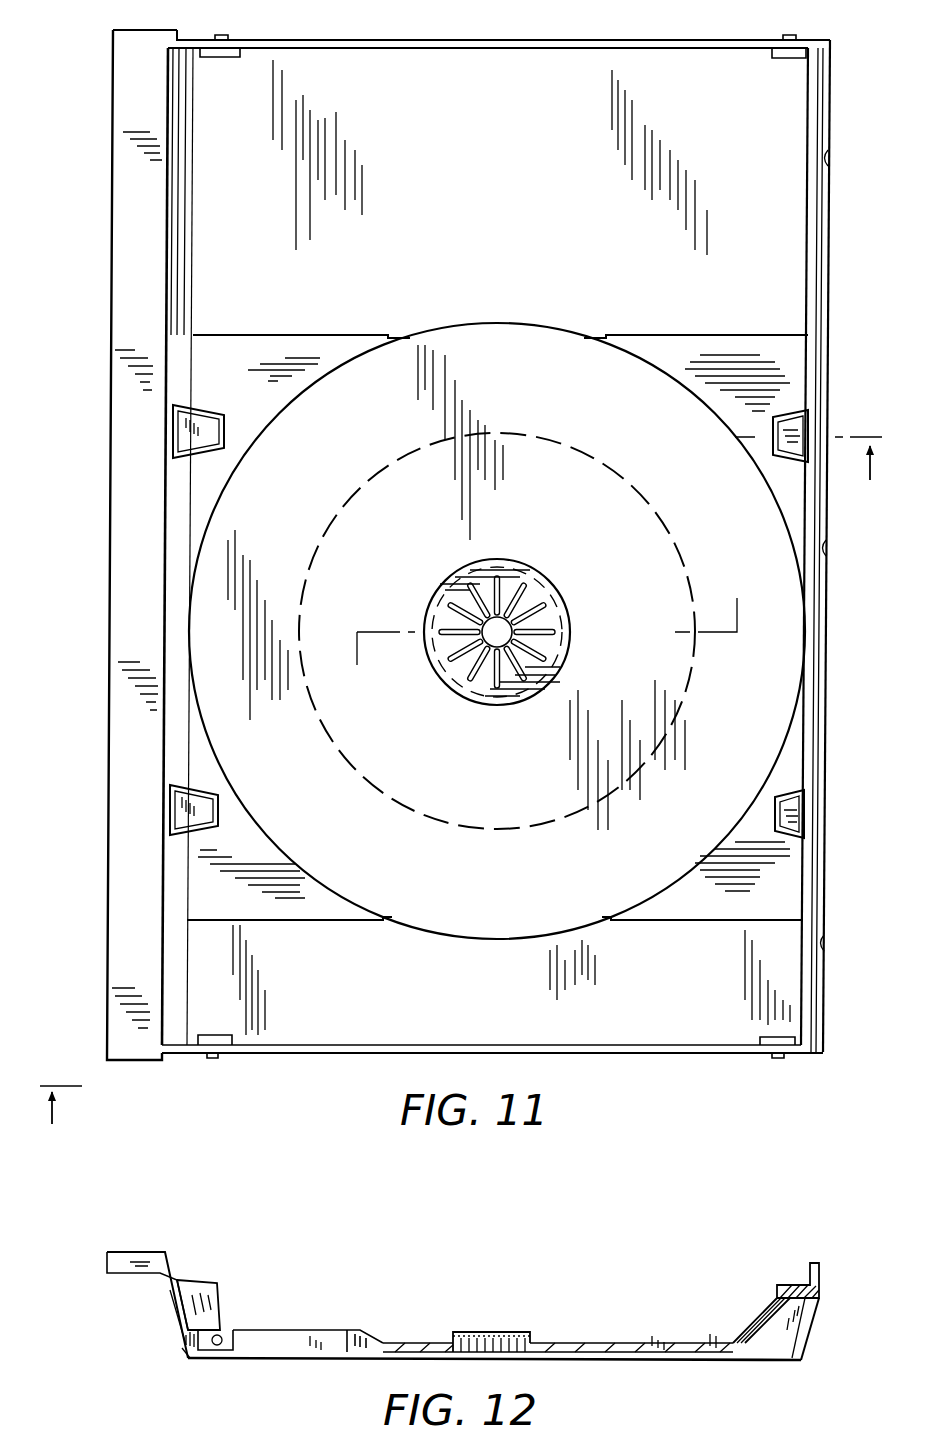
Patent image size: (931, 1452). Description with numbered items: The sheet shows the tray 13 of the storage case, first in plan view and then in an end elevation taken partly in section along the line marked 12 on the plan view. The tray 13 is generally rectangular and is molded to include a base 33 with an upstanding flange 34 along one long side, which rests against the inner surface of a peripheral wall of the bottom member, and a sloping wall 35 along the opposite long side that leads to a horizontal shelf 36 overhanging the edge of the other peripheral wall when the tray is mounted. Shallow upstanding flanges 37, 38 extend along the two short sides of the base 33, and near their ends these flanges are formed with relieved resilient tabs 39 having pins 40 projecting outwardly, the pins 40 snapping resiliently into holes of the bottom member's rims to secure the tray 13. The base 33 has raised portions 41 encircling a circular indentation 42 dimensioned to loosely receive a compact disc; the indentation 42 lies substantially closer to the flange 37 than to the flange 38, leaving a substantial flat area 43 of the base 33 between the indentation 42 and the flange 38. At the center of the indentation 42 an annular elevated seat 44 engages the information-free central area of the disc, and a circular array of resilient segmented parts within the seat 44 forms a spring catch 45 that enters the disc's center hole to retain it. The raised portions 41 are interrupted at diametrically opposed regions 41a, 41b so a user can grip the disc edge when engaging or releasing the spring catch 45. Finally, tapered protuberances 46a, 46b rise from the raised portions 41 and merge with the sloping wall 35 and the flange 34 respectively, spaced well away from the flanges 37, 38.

In FIG. 11, the lid member 12 is at (465, 805).
In FIG. 11, the tray 13 is at (472, 558).
In FIG. 12, the tray 13 is at (463, 1301).
In FIG. 11, the base 33 is at (398, 86).
In FIG. 11, the upstanding flange 34 is at (823, 322).
In FIG. 12, the upstanding flange 34 is at (802, 1283).
In FIG. 11, the sloping wall 35 is at (183, 314).
In FIG. 12, the sloping wall 35 is at (175, 1312).
In FIG. 11, the horizontal shelf 36 is at (123, 648).
In FIG. 12, the horizontal shelf 36 is at (141, 1252).
In FIG. 11, the shallow upstanding flange 37 is at (626, 1054).
In FIG. 11, the shallow upstanding flange 38 is at (688, 46).
In FIG. 12, the relieved resilient tab 39 is at (183, 1362).
In FIG. 11, the pin 40 is at (220, 38).
In FIG. 12, the pin 40 is at (223, 1332).
In FIG. 11, the raised portions 41 is at (290, 345).
In FIG. 12, the raised portions 41 is at (315, 1337).
In FIG. 11, the interruption of raised portions 41a is at (582, 319).
In FIG. 11, the interruption of raised portions 41b is at (655, 961).
In FIG. 11, the circular indentation 42 is at (418, 340).
In FIG. 12, the circular indentation 42 is at (622, 1343).
In FIG. 11, the flat area 43 is at (516, 202).
In FIG. 11, the annular elevated seat 44 is at (518, 608).
In FIG. 12, the annular elevated seat 44 is at (511, 1319).
In FIG. 11, the spring catch 45 is at (488, 584).
In FIG. 12, the spring catch 45 is at (495, 1332).
In FIG. 11, the tapered protuberance 46a is at (180, 432).
In FIG. 12, the tapered protuberance 46a is at (251, 1253).
In FIG. 11, the tapered protuberance 46b is at (875, 422).
In FIG. 12, the tapered protuberance 46b is at (778, 1309).